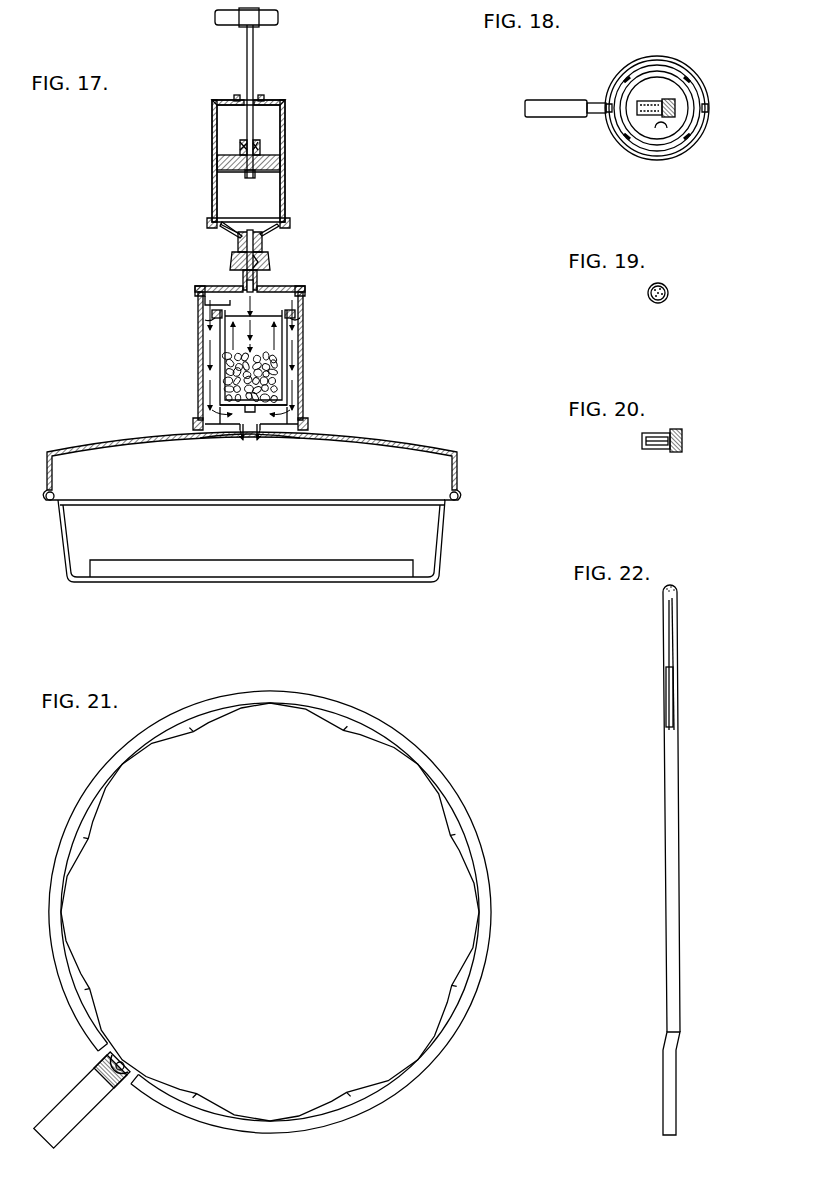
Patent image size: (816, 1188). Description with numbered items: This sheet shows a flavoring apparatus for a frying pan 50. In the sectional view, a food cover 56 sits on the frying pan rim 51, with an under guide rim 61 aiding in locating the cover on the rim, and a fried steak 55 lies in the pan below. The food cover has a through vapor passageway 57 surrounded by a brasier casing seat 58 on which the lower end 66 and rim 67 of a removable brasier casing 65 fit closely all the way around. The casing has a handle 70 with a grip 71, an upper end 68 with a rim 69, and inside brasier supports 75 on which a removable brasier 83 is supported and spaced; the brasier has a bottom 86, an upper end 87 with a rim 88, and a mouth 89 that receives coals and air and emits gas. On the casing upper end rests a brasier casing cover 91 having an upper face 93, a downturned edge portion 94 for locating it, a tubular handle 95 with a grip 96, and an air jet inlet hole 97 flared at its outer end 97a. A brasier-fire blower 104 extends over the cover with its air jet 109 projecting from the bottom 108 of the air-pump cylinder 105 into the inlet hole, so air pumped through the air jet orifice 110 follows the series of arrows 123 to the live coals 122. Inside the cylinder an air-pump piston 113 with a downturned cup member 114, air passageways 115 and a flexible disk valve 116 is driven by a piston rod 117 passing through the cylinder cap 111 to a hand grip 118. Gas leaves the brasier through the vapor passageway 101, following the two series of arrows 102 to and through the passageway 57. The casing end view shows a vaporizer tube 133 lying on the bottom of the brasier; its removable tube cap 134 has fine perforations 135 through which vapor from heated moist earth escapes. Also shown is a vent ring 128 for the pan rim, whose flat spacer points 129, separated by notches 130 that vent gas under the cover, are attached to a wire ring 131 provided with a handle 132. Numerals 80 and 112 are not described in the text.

In FIG. 17, the frying pan 50 is at (442, 532).
In FIG. 17, the frying pan rim 51 is at (460, 497).
In FIG. 17, the fried steak 55 is at (272, 560).
In FIG. 17, the food cover 56 is at (432, 446).
In FIG. 17, the vapor passageway 57 is at (252, 434).
In FIG. 17, the brasier casing seat 58 is at (312, 432).
In FIG. 17, the under guide rim 61 is at (106, 504).
In FIG. 17, the brasier casing 65 is at (304, 366).
In FIG. 18, the brasier casing 65 is at (708, 84).
In FIG. 17, the lower end 66 is at (306, 422).
In FIG. 17, the rim 67 is at (196, 422).
In FIG. 17, the upper end 68 is at (222, 304).
In FIG. 18, the upper end 68 is at (688, 148).
In FIG. 17, the rim 69 is at (197, 289).
In FIG. 18, the handle 70 is at (596, 100).
In FIG. 18, the grip 71 is at (548, 118).
In FIG. 17, the brasier supports 75 is at (234, 420).
In FIG. 17, the bottom chamber 80 is at (282, 412).
In FIG. 17, the brasier 83 is at (288, 340).
In FIG. 18, the brasier 83 is at (642, 70).
In FIG. 17, the bottom 86 is at (224, 402).
In FIG. 18, the bottom 86 is at (664, 85).
In FIG. 17, the upper end 87 is at (294, 314).
In FIG. 18, the upper end 87 is at (693, 117).
In FIG. 17, the rim 88 is at (213, 314).
In FIG. 18, the mouth 89 is at (661, 136).
In FIG. 17, the brasier casing cover 91 is at (306, 289).
In FIG. 17, the upper face 93 is at (270, 262).
In FIG. 17, the downturned edge portion 94 is at (304, 296).
In FIG. 17, the tubular handle 95 is at (243, 280).
In FIG. 17, the grip 96 is at (231, 260).
In FIG. 17, the air jet inlet hole 97 is at (262, 250).
In FIG. 17, the flared outer end 97a is at (264, 234).
In FIG. 17, the vapor passageway 101 is at (199, 356).
In FIG. 17, the series of arrows 102 is at (300, 322).
In FIG. 17, the brasier-fire blower 104 is at (286, 124).
In FIG. 17, the air-pump cylinder 105 is at (212, 126).
In FIG. 17, the bottom 108 is at (226, 226).
In FIG. 17, the air jet 109 is at (243, 242).
In FIG. 17, the air jet orifice 110 is at (238, 234).
In FIG. 17, the cylinder cap 111 is at (286, 99).
In FIG. 17, the cylinder cap tab 112 is at (268, 97).
In FIG. 17, the air-pump piston 113 is at (281, 160).
In FIG. 17, the downturned cup member 114 is at (228, 172).
In FIG. 17, the air passageways 115 is at (240, 148).
In FIG. 17, the flexible disk valve 116 is at (257, 176).
In FIG. 17, the piston rod 117 is at (254, 52).
In FIG. 17, the hand grip 118 is at (272, 24).
In FIG. 17, the live coals 122 is at (222, 336).
In FIG. 17, the series of arrows 123 is at (262, 288).
In FIG. 21, the vent ring 128 is at (398, 738).
In FIG. 22, the vent ring 128 is at (681, 800).
In FIG. 21, the flat spacer points 129 is at (195, 735).
In FIG. 22, the flat spacer points 129 is at (678, 634).
In FIG. 21, the notches 130 is at (266, 712).
In FIG. 22, the notches 130 is at (679, 680).
In FIG. 21, the wire ring 131 is at (132, 1052).
In FIG. 22, the wire ring 131 is at (665, 697).
In FIG. 21, the handle 132 is at (74, 1122).
In FIG. 22, the handle 132 is at (662, 1098).
In FIG. 18, the vaporizer tube 133 is at (628, 146).
In FIG. 19, the vaporizer tube 133 is at (667, 288).
In FIG. 20, the vaporizer tube 133 is at (645, 450).
In FIG. 19, the removable tube cap 134 is at (666, 298).
In FIG. 20, the removable tube cap 134 is at (680, 431).
In FIG. 19, the fine perforations 135 is at (651, 298).
In FIG. 20, the fine perforations 135 is at (684, 444).